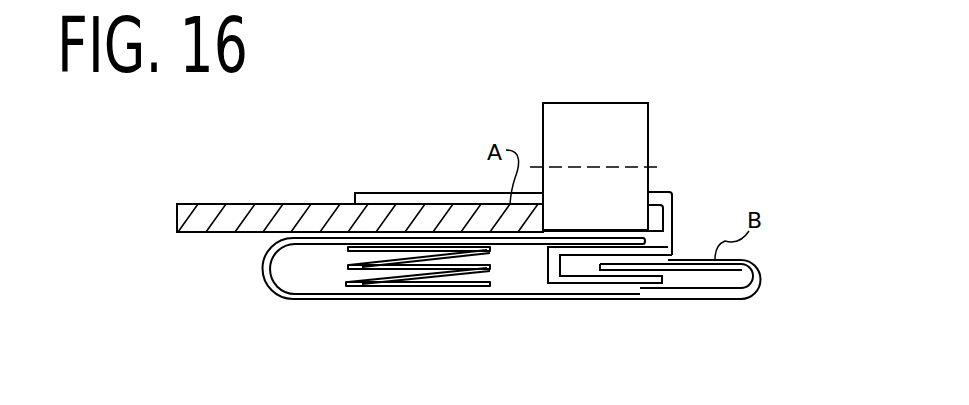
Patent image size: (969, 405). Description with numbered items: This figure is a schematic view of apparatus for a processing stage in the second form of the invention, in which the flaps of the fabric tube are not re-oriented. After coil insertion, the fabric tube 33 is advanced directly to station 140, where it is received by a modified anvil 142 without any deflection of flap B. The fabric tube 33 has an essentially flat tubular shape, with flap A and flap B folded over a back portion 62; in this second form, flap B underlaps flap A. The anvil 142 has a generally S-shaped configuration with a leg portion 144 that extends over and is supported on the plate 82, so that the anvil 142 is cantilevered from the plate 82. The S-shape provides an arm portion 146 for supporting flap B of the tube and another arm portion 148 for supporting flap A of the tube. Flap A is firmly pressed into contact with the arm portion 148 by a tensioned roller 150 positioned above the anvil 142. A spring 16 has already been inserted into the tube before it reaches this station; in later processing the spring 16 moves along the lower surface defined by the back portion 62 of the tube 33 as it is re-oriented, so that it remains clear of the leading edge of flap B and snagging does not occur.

The spring 16 is at (347, 270).
The fabric tube 33 is at (268, 297).
The back portion 62 is at (475, 295).
The plate 82 is at (313, 204).
The station 140 is at (651, 158).
The anvil 142 is at (668, 192).
The leg portion 144 is at (437, 193).
The arm portion 146 is at (643, 290).
The arm portion 148 is at (668, 247).
The tensioned roller 150 is at (600, 103).